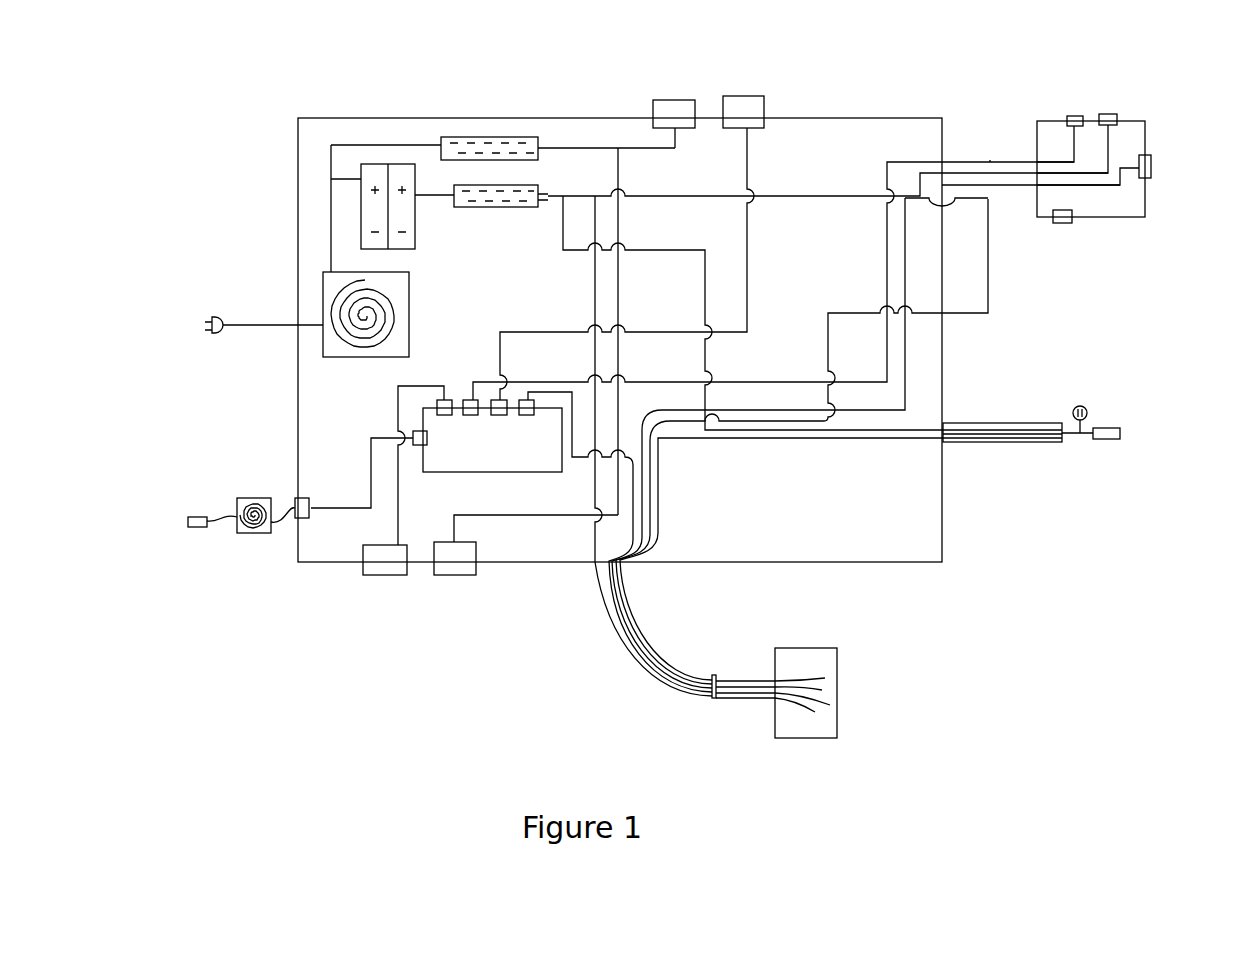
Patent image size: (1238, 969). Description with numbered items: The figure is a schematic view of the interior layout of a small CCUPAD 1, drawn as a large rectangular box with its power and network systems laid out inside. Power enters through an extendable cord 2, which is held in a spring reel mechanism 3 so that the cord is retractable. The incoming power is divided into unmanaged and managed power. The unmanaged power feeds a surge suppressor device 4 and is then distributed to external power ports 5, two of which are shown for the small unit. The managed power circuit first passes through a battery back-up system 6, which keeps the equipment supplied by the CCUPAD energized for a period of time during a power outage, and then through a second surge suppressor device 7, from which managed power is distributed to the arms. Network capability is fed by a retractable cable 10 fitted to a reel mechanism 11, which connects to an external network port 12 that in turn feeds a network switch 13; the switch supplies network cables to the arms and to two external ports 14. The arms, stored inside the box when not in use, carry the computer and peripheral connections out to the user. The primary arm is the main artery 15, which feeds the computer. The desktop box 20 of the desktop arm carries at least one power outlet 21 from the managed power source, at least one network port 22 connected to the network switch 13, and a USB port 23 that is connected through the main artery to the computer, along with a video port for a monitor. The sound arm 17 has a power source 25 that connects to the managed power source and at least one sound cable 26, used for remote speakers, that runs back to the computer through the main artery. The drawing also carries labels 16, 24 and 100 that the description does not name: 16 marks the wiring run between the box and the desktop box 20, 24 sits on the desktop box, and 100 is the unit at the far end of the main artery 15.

The CCUPAD 1 is at (235, 200).
The extendable cord 2 is at (210, 316).
The spring reel mechanism 3 is at (327, 310).
The surge suppressor device 4 is at (490, 135).
The external power ports 5 is at (676, 98).
The battery back-up system 6 is at (415, 233).
The second surge suppressor device 7 is at (500, 203).
The retractable cable 10 is at (198, 533).
The reel mechanism 11 is at (237, 498).
The external network port 12 is at (293, 498).
The network switch 13 is at (468, 463).
The external ports 14 is at (750, 97).
The main artery 15 is at (635, 648).
The wiring harness 16 is at (990, 163).
The sound arm 17 is at (1020, 443).
The desktop box 20 is at (1035, 118).
The power outlet 21 is at (1108, 113).
The network port 22 is at (1073, 115).
The USB port 23 is at (1153, 160).
The switch 24 is at (1065, 225).
The power source 25 is at (1083, 403).
The sound cable 26 is at (1107, 438).
The inflatable device 100 is at (837, 723).